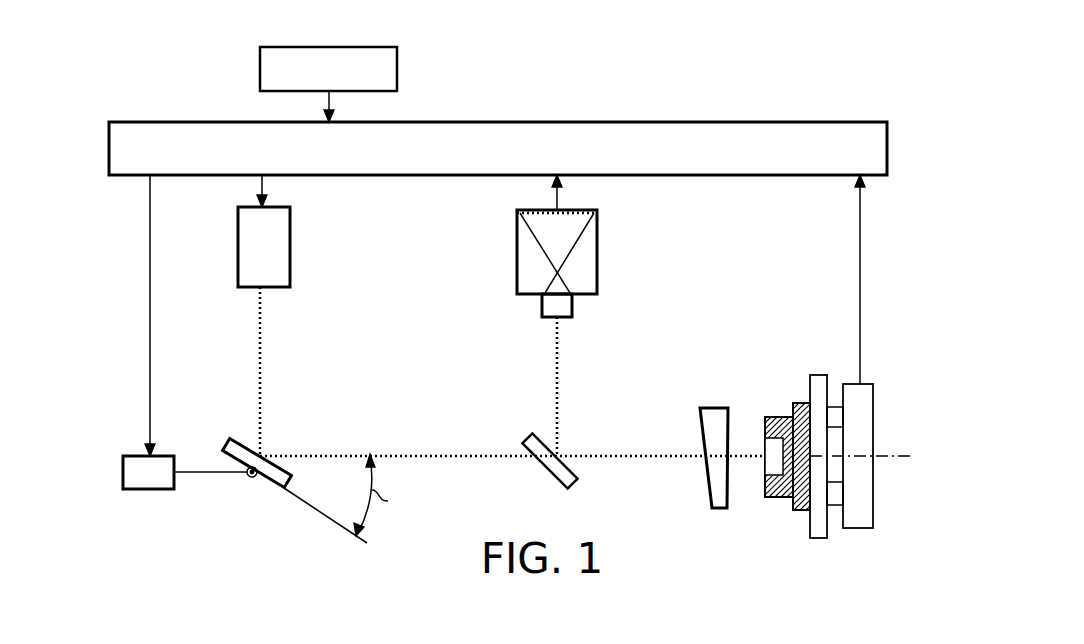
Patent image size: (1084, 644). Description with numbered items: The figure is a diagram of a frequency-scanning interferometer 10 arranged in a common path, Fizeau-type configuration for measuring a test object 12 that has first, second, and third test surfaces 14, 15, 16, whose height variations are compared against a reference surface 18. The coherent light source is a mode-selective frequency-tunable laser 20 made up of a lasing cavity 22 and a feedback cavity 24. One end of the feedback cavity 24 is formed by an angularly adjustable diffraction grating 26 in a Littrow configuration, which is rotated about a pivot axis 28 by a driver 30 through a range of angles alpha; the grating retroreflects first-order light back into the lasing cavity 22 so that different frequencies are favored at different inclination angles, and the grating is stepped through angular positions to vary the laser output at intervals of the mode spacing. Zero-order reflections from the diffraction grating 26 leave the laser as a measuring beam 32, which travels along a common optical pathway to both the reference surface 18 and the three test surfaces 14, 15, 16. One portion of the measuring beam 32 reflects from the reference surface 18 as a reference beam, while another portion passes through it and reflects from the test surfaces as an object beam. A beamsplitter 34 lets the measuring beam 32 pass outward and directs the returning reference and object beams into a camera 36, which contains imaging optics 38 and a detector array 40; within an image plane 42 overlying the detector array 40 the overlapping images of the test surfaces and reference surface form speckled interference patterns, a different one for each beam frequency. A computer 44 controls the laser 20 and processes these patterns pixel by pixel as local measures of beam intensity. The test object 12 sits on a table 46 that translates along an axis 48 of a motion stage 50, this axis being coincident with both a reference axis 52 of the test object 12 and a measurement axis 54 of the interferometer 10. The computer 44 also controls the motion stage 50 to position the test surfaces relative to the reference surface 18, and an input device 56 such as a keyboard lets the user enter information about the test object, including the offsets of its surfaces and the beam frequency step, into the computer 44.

The frequency-scanning interferometer 10 is at (122, 260).
The test object 12 is at (799, 436).
The first test surface 14 is at (765, 427).
The second test surface 15 is at (767, 459).
The third test surface 16 is at (792, 500).
The reference surface 18 is at (728, 426).
The frequency-tunable laser 20 is at (268, 253).
The lasing cavity 22 is at (221, 207).
The feedback cavity 24 is at (221, 288).
The angularly adjustable diffraction grating 26 is at (246, 447).
The pivot axis 28 is at (250, 479).
The driver 30 is at (159, 486).
The measuring beam 32 is at (450, 453).
The beamsplitter 34 is at (547, 437).
The camera 36 is at (610, 253).
The imaging optics 38 is at (542, 305).
The detector array 40 is at (547, 214).
The image plane 42 is at (573, 212).
The computer 44 is at (420, 163).
The table 46 is at (825, 375).
The axis 48 is at (890, 458).
The motion stage 50 is at (853, 528).
The reference axis 52 is at (898, 536).
The measurement axis 54 is at (898, 564).
The input device 56 is at (328, 84).